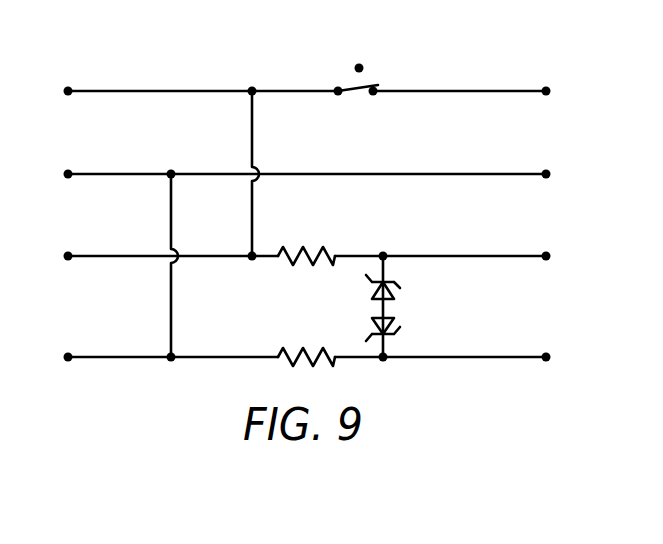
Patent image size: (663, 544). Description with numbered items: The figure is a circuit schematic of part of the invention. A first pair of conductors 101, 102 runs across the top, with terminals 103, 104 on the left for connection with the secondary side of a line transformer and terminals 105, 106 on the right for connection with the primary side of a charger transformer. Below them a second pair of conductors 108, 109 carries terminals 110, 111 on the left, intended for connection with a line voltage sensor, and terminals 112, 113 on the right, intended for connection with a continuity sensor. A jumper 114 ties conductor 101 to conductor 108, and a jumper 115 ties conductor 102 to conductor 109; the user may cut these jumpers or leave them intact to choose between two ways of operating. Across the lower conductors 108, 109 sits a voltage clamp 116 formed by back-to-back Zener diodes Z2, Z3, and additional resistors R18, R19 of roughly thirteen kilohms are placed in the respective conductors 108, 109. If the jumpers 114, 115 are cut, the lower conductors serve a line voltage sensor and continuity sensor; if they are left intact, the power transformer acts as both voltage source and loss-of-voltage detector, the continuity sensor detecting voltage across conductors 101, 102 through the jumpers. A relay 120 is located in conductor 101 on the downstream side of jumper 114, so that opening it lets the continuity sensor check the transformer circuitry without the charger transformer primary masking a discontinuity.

The conductor 101 is at (430, 91).
The conductor 102 is at (430, 174).
The terminal 103 is at (68, 88).
The terminal 104 is at (68, 171).
The terminal 105 is at (546, 88).
The terminal 106 is at (546, 171).
The conductor 108 is at (429, 256).
The conductor 109 is at (447, 357).
The terminal 110 is at (68, 253).
The terminal 111 is at (68, 354).
The terminal 112 is at (546, 253).
The terminal 113 is at (546, 354).
The jumper 114 is at (253, 104).
The jumper 115 is at (172, 216).
The voltage clamp 116 is at (382, 307).
The relay 120 is at (356, 88).
The resistor R18 is at (293, 245).
The resistor R19 is at (296, 342).
The Zener diode Z2 is at (399, 293).
The Zener diode Z3 is at (399, 331).